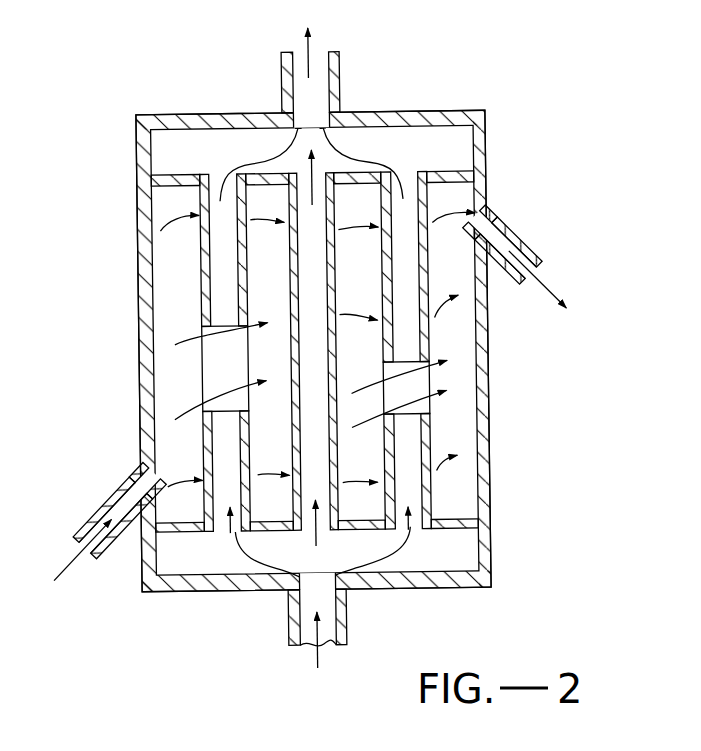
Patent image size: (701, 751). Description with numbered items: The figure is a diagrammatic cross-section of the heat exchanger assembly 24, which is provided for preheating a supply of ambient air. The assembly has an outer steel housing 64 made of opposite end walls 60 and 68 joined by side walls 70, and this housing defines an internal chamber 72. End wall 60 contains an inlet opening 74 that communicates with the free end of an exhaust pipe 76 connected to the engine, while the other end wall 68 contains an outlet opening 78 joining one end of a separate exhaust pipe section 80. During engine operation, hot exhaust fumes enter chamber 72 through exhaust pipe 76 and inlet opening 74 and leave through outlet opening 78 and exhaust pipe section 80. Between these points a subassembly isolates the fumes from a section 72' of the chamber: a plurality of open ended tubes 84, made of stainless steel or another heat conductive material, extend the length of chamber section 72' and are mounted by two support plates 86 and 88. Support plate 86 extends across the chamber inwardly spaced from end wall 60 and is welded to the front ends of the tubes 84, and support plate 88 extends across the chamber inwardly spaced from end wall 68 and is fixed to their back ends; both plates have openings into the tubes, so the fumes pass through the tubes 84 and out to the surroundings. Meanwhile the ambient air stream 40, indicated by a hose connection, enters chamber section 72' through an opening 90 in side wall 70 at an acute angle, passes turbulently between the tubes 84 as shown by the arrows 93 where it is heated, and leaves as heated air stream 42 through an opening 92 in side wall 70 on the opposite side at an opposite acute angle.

The heat exchanger assembly 24 is at (561, 115).
The ambient air stream 40 is at (96, 507).
The heated air stream 42 is at (526, 243).
The end wall 60 is at (427, 592).
The outer steel housing 64 is at (421, 109).
The end wall 68 is at (366, 119).
The side walls 70 is at (129, 254).
The internal chamber 72 is at (230, 353).
The chamber section 72' is at (319, 349).
The inlet opening 74 is at (319, 600).
The exhaust pipe 76 is at (289, 615).
The outlet opening 78 is at (312, 105).
The exhaust pipe section 80 is at (289, 73).
The open ended tubes 84 is at (203, 271).
The support plate 86 is at (176, 531).
The support plate 88 is at (182, 174).
The opening 90 is at (128, 476).
The opening 92 is at (492, 215).
The arrows 93 is at (189, 337).